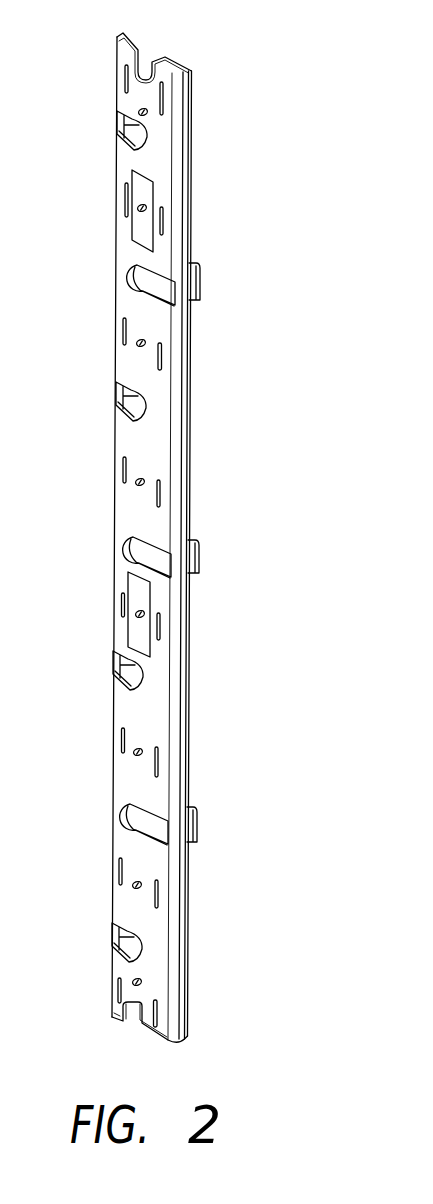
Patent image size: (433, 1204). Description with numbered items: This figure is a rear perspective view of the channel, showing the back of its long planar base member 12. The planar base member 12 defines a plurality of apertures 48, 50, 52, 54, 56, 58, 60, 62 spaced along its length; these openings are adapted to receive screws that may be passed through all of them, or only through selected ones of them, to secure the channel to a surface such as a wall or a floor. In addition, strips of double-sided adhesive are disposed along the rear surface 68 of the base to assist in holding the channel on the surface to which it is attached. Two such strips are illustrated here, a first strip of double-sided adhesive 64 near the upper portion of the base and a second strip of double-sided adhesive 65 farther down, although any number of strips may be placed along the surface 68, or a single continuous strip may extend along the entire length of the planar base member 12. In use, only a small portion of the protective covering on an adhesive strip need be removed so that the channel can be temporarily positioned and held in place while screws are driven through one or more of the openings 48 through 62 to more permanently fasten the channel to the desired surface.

The planar base member 12 is at (158, 64).
The aperture 48 is at (139, 117).
The aperture 50 is at (140, 212).
The aperture 52 is at (138, 347).
The aperture 54 is at (138, 486).
The aperture 56 is at (138, 618).
The aperture 58 is at (136, 755).
The aperture 60 is at (135, 888).
The aperture 62 is at (134, 986).
The strip of double-sided adhesive 64 is at (145, 207).
The mounting plate 65 is at (145, 594).
The surface 68 is at (155, 322).